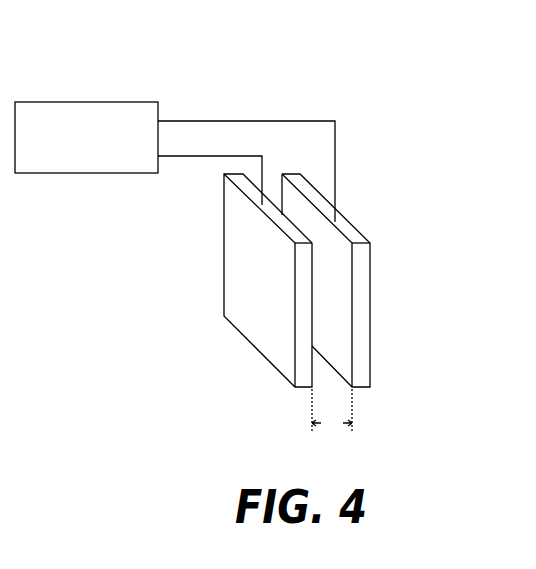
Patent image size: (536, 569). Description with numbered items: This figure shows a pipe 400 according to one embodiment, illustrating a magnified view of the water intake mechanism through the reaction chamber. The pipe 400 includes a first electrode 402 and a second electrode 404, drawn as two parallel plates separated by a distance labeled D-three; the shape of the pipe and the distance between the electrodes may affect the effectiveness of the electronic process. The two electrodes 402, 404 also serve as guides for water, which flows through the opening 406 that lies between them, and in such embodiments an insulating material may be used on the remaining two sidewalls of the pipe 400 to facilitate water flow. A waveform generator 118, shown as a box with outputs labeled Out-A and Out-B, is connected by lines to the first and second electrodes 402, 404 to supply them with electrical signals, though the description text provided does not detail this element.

The pipe 400 is at (80, 65).
The waveform generator 118 is at (150, 102).
The first electrode 402 is at (370, 316).
The second electrode 404 is at (256, 349).
The opening 406 is at (318, 370).